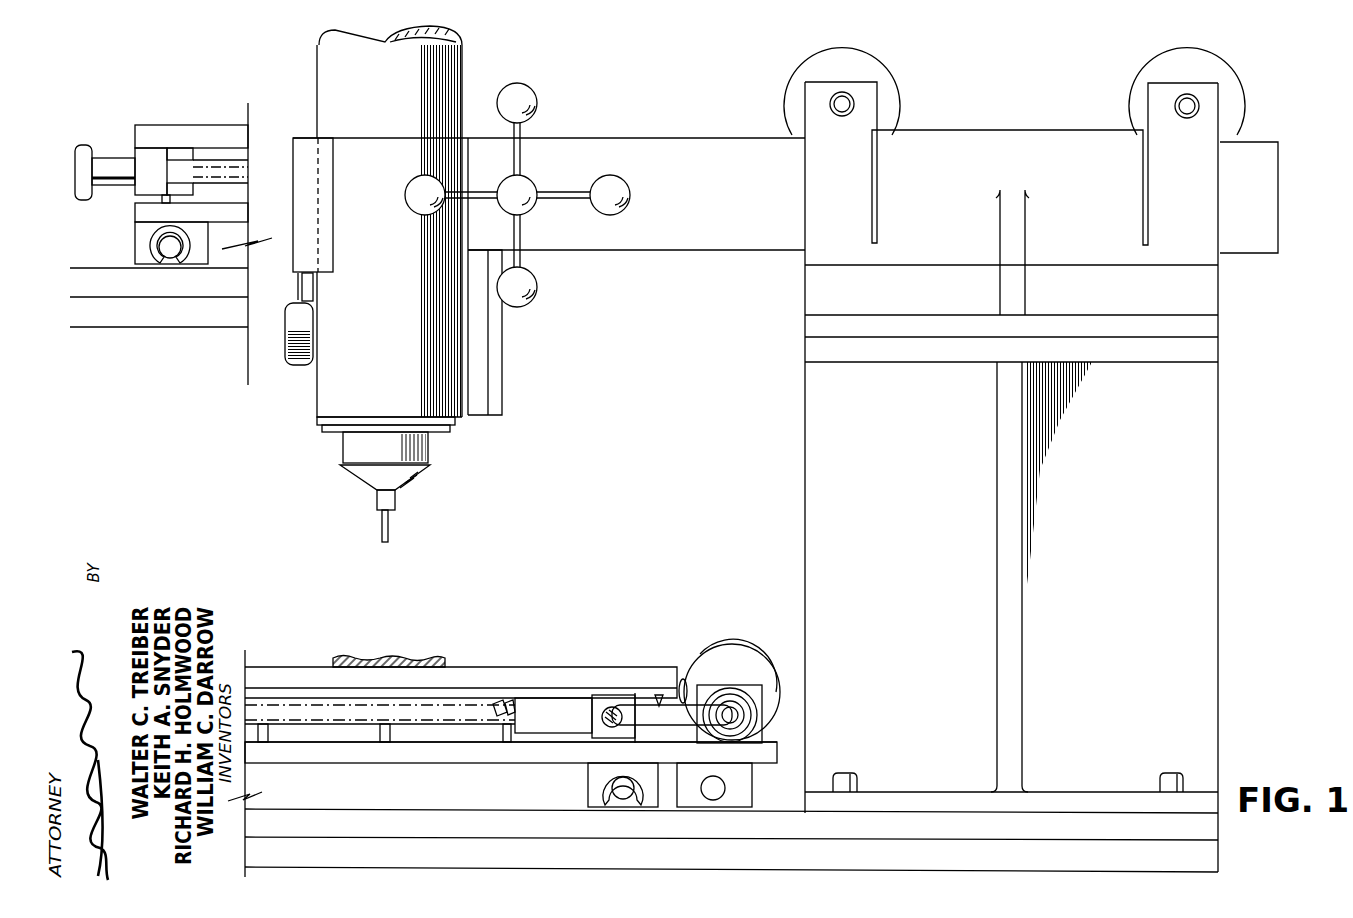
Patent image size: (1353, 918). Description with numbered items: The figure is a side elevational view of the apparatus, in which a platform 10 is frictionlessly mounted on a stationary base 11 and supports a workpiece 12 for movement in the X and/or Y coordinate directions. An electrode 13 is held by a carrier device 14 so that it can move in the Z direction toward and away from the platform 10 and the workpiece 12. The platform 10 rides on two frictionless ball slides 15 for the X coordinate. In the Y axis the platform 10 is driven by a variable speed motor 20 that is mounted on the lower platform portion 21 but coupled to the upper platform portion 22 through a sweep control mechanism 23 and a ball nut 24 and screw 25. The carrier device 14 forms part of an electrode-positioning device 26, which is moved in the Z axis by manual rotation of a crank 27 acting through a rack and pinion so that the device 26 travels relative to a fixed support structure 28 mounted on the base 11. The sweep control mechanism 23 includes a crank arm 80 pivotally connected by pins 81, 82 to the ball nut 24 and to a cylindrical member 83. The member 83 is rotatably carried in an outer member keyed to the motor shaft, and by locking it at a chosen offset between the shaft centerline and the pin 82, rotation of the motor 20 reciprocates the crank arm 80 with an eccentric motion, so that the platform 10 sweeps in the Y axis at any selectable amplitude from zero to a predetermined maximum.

The platform 10 is at (144, 118).
The stationary base 11 is at (92, 262).
The workpiece 12 is at (437, 656).
The electrode 13 is at (390, 528).
The carrier device 14 is at (413, 478).
The frictionless ball slides 15 is at (163, 243).
The variable speed motor 20 is at (761, 653).
The lower platform portion 21 is at (776, 746).
The upper platform portion 22 is at (465, 676).
The sweep control mechanism 23 is at (659, 694).
The ball nut 24 is at (597, 697).
The screw 25 is at (498, 703).
The electrode-positioning device 26 is at (308, 402).
The crank 27 is at (531, 96).
The fixed support structure 28 is at (795, 280).
The crank arm 80 is at (684, 682).
The pin 81 is at (612, 707).
The pin 82 is at (722, 715).
The cylindrical member 83 is at (734, 701).